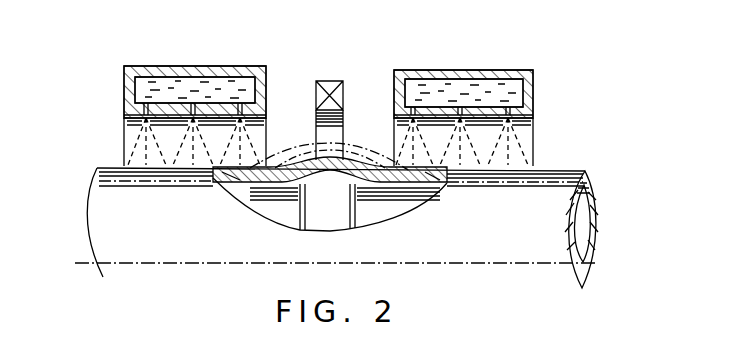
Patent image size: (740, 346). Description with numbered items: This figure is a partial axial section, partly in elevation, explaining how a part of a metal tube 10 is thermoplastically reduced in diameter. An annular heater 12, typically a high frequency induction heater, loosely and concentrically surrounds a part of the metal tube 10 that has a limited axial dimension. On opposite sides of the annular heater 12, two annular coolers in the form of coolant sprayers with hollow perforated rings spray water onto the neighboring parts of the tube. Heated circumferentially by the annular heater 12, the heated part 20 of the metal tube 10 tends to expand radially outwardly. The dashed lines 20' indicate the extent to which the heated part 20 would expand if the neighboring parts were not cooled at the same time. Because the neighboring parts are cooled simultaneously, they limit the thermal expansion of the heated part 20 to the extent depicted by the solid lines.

The metal tube 10 is at (587, 168).
The annular heater 12 is at (331, 80).
The heated part 20 is at (330, 194).
The dashed lines 20' is at (329, 135).